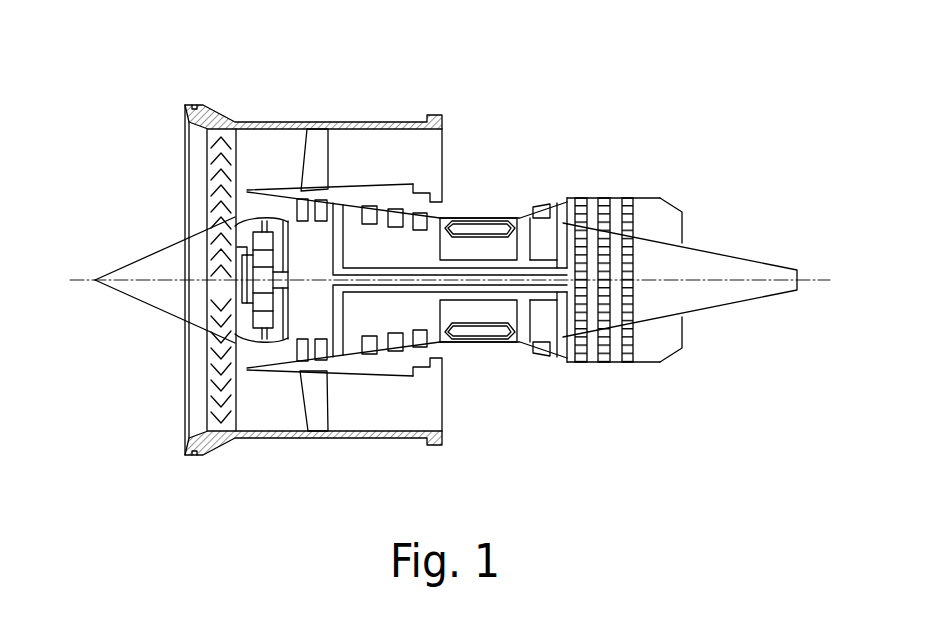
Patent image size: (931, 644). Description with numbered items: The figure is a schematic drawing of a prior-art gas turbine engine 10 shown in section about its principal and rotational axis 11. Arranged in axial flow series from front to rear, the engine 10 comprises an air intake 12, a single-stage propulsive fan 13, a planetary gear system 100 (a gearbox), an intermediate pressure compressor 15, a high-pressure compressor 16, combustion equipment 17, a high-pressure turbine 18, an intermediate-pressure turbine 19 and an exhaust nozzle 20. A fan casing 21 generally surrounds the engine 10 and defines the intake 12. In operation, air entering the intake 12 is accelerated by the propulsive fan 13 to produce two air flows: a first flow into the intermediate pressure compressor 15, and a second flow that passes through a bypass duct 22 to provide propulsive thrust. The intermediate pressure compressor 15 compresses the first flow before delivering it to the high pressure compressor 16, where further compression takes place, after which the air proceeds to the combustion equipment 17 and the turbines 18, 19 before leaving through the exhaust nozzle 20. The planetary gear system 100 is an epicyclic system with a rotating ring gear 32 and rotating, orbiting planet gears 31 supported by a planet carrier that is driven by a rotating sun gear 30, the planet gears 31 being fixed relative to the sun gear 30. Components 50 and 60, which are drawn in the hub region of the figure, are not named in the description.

The gas turbine engine 10 is at (684, 127).
The principal and rotational axis 11 is at (72, 279).
The air intake 12 is at (160, 142).
The propulsive fan 13 is at (220, 408).
The intermediate pressure compressor 15 is at (270, 210).
The high-pressure compressor 16 is at (435, 235).
The combustion equipment 17 is at (478, 343).
The high-pressure turbine 18 is at (557, 213).
The intermediate-pressure turbine 19 is at (602, 198).
The exhaust nozzle 20 is at (676, 231).
The fan casing 21 is at (386, 121).
The bypass duct 22 is at (428, 148).
The sun gear 30 is at (252, 338).
The planet gears 31 is at (233, 263).
The ring gear 32 is at (250, 212).
The bearing support 50 is at (240, 292).
The core casing / shaft 60 is at (383, 288).
The planetary gear system 100 is at (262, 348).